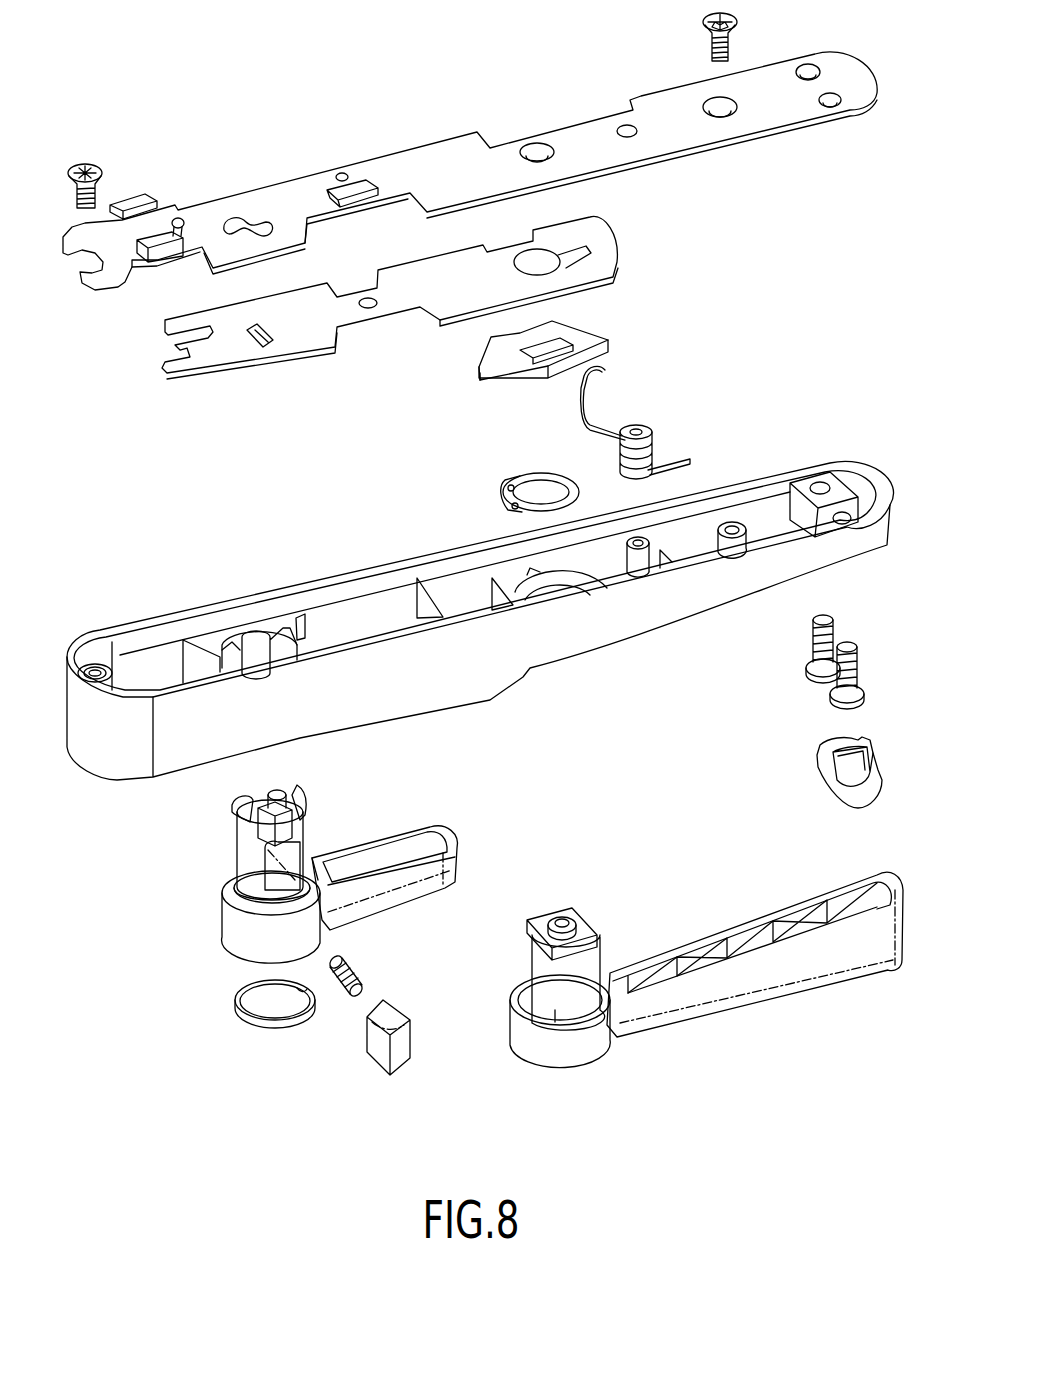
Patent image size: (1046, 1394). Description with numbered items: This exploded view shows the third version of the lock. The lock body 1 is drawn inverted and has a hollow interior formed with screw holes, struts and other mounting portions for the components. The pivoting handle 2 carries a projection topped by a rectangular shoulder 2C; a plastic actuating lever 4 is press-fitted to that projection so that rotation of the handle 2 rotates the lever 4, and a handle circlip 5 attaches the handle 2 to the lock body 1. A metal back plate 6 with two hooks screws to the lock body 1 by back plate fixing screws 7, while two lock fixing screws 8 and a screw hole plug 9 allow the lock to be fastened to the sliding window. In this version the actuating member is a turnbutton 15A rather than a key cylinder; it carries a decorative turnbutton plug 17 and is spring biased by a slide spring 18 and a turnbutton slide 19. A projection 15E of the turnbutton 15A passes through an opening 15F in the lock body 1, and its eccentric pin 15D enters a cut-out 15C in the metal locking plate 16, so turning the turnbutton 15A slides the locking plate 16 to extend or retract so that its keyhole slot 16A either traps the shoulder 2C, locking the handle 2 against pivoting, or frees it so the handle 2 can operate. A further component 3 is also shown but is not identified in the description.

The lock body 1 is at (480, 557).
The pivoting handle 2 is at (706, 935).
The rectangular shoulder 2C is at (590, 905).
The torsion spring 3 is at (643, 412).
The actuating lever 4 is at (625, 322).
The handle circlip 5 is at (492, 478).
The back plate 6 is at (290, 155).
The back plate fixing screws 7 is at (105, 140).
The lock fixing screws 8 is at (783, 678).
The screw hole plug 9 is at (805, 778).
The turnbutton 15A is at (292, 835).
The cut-out 15C is at (286, 368).
The eccentric pin 15D is at (278, 791).
The projection 15E is at (227, 853).
The opening 15F is at (240, 633).
The locking plate 16 is at (403, 345).
The keyhole slot 16A is at (555, 268).
The turnbutton plug 17 is at (233, 1032).
The slide spring 18 is at (338, 1007).
The turnbutton slide 19 is at (420, 1050).